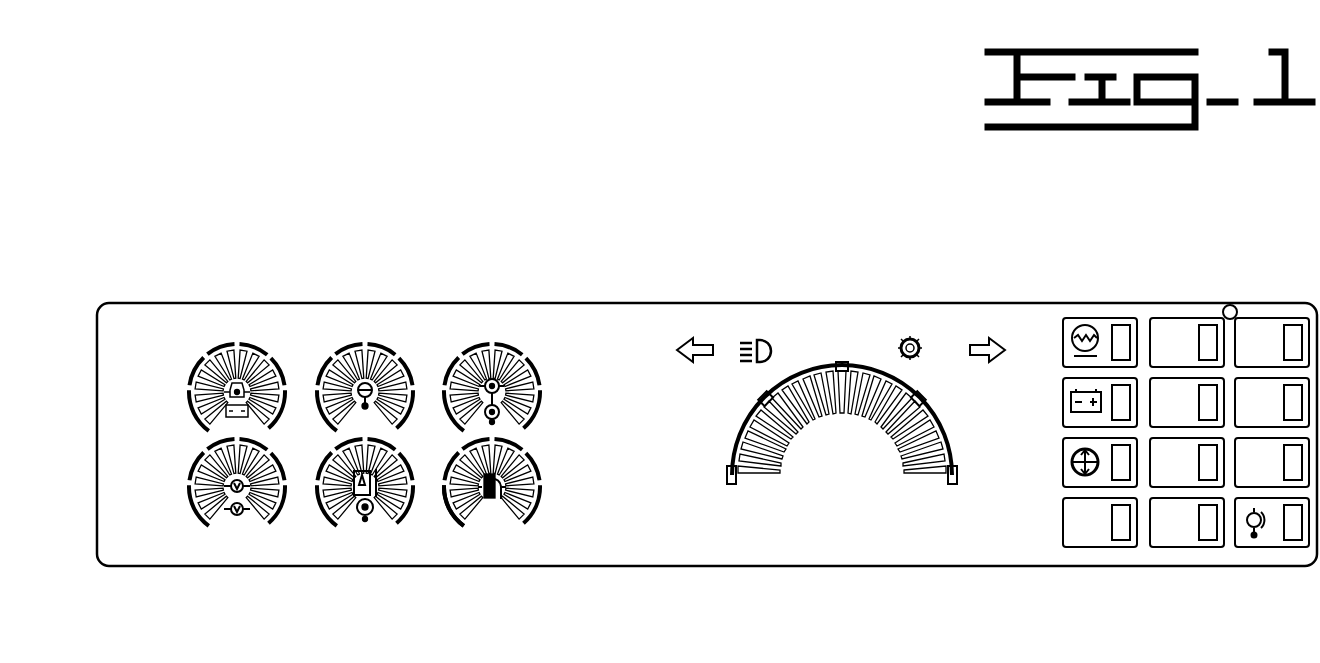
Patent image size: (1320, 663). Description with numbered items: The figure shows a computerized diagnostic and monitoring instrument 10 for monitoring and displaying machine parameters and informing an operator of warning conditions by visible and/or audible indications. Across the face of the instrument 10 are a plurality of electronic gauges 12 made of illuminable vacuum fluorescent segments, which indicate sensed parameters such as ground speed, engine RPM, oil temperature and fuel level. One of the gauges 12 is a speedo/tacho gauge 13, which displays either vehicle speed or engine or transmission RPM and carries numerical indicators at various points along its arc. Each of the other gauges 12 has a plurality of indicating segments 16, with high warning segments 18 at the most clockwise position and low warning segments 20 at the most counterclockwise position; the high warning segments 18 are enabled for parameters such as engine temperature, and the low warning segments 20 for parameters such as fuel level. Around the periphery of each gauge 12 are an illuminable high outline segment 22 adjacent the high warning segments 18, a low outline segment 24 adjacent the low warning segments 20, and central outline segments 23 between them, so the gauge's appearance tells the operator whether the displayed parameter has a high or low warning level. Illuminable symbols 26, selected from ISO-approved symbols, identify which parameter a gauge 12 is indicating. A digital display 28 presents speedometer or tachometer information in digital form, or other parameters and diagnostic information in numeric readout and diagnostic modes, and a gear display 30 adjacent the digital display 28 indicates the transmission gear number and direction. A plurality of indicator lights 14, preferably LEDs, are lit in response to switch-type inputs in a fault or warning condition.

The instrument 10 is at (538, 272).
The electronic gauges 12 is at (538, 535).
The speedo/tacho gauge 13 is at (717, 520).
The indicator lights 14 is at (1272, 316).
The indicating segments 16 is at (517, 443).
The high warning segments 18 is at (382, 522).
The low warning segments 20 is at (345, 522).
The high outline segment 22 is at (536, 516).
The central outline segments 23 is at (538, 469).
The low outline segment 24 is at (448, 520).
The illuminable symbols 26 is at (232, 530).
The digital display 28 is at (841, 533).
The gear display 30 is at (808, 478).